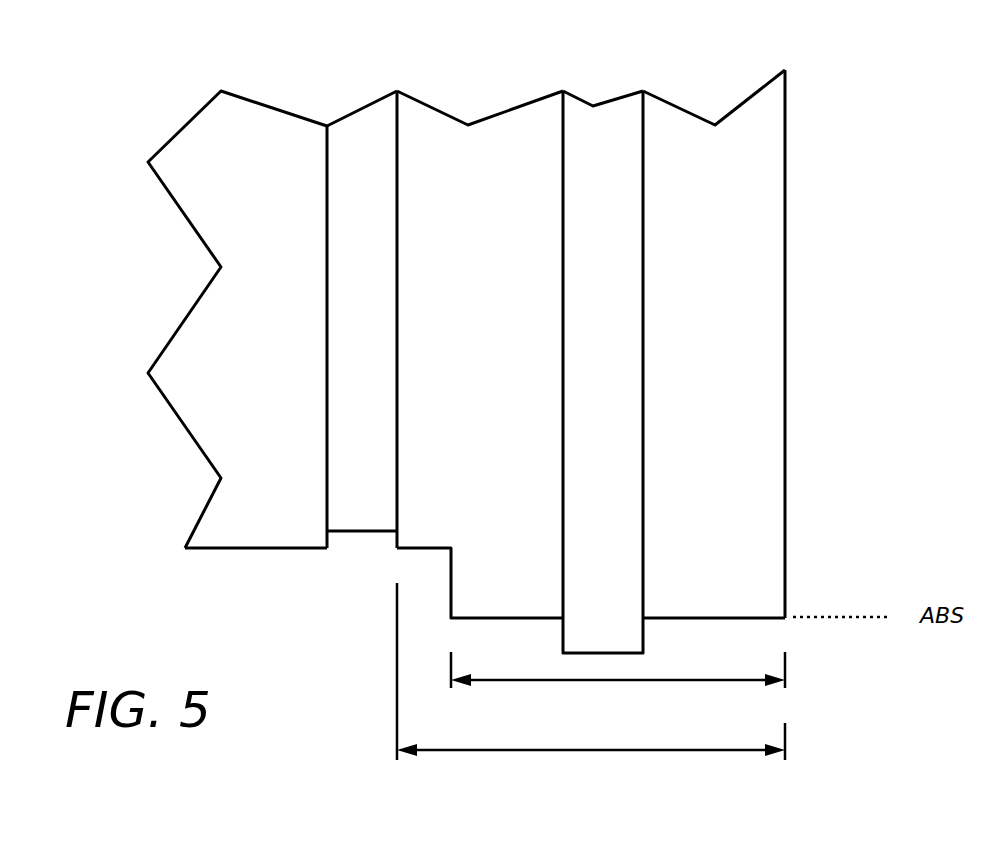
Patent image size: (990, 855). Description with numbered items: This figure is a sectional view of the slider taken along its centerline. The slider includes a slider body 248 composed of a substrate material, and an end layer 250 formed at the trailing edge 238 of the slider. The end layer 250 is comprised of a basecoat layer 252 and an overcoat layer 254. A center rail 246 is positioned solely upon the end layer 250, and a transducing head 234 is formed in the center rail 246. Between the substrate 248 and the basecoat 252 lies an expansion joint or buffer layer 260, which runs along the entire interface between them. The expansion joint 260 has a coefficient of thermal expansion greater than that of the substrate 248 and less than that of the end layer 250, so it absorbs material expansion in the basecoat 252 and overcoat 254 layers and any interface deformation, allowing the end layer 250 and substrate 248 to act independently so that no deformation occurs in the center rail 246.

The slider body 248 is at (217, 137).
The expansion joint 260 is at (368, 135).
The basecoat layer 252 is at (498, 163).
The transducing head 234 is at (593, 137).
The overcoat layer 254 is at (703, 163).
The trailing edge 238 is at (785, 390).
The center rail 246 is at (618, 683).
The end layer 250 is at (591, 684).